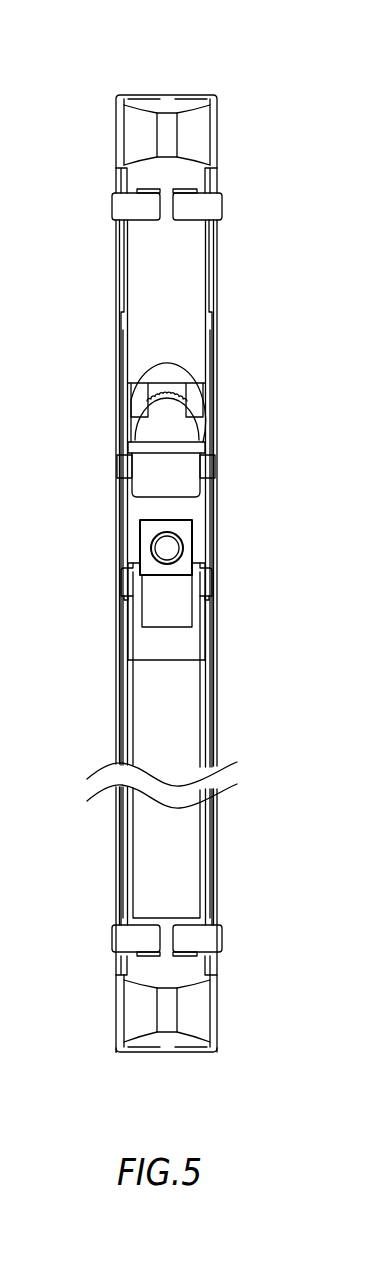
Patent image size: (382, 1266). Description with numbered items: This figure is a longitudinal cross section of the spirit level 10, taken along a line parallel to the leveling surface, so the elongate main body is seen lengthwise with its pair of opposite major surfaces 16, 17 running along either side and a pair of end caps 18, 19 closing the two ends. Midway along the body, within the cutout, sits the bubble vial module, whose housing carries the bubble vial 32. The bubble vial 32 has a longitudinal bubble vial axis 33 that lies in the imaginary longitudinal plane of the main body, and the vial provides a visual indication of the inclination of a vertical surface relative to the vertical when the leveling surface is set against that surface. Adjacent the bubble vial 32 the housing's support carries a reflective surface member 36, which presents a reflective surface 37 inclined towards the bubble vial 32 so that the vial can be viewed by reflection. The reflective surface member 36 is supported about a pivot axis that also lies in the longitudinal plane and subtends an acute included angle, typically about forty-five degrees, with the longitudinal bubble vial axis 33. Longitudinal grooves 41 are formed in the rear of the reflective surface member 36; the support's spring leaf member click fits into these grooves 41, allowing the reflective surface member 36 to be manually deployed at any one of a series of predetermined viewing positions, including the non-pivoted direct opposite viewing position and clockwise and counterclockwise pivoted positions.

The spirit level 10 is at (103, 61).
The major surface 16 is at (217, 732).
The major surface 17 is at (116, 740).
The end cap 18 is at (218, 147).
The end cap 19 is at (217, 1012).
The bubble vial 32 is at (150, 547).
The longitudinal bubble vial axis 33 is at (167, 548).
The reflective surface member 36 is at (132, 442).
The reflective surface 37 is at (165, 452).
The longitudinal grooves 41 is at (137, 436).